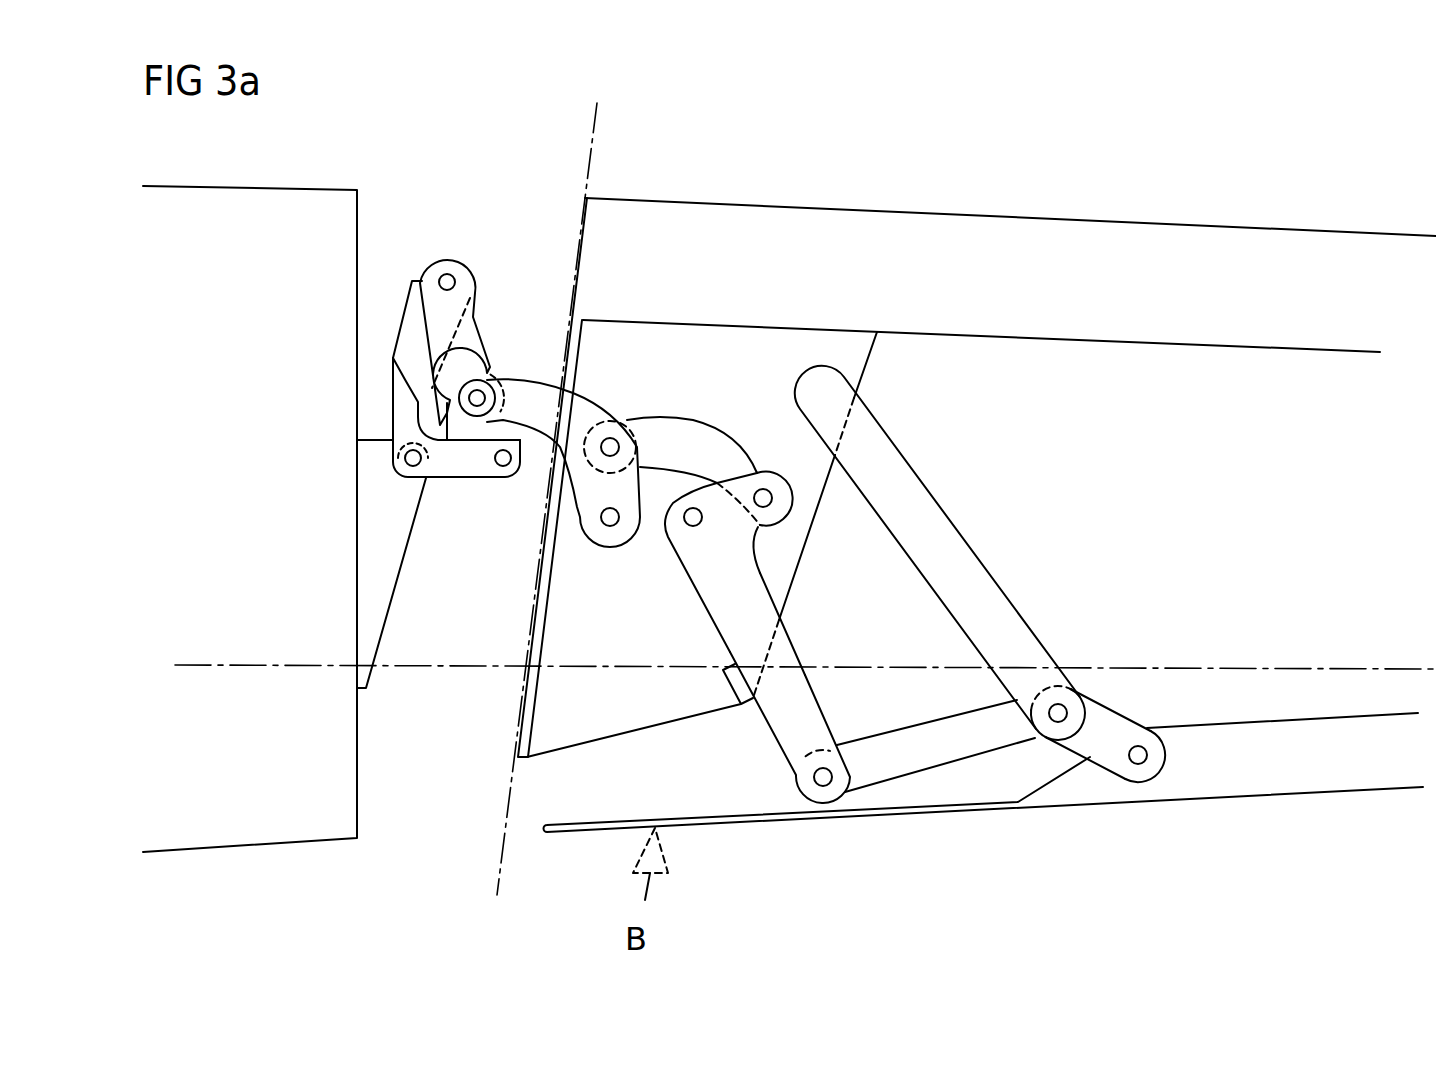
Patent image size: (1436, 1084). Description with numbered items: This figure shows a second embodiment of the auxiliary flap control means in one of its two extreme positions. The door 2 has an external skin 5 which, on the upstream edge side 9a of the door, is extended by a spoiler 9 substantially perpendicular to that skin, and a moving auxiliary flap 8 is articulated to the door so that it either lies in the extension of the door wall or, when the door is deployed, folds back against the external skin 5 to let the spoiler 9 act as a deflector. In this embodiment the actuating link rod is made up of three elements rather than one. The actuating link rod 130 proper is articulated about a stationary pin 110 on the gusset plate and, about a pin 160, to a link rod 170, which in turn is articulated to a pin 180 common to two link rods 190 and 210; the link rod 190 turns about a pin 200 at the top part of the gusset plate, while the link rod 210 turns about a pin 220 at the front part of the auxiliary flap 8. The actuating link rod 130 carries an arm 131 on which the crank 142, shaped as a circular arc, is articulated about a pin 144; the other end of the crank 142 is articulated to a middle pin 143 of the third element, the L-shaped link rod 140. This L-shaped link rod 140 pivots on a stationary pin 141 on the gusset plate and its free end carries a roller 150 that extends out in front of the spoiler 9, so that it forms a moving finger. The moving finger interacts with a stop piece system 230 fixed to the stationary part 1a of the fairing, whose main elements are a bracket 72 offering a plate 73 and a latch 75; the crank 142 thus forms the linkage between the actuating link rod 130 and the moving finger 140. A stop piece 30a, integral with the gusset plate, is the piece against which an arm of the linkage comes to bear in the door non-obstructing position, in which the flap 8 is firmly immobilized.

The stationary part of the fairing 1a is at (284, 519).
The door 2 is at (1322, 203).
The external skin 5 is at (1180, 218).
The auxiliary flap 8 is at (1223, 747).
The spoiler 9 is at (520, 718).
The upstream edge side 9a is at (590, 158).
The stop piece 30a is at (733, 693).
The bracket 72 is at (405, 367).
The plate 73 is at (455, 447).
The latch 75 is at (476, 292).
The stationary pin 110 is at (690, 527).
The actuating link rod 130 is at (783, 708).
The arm 131 is at (757, 533).
The L-shaped link rod 140 is at (605, 335).
The stationary pin 141 is at (602, 519).
The crank 142 is at (762, 324).
The middle pin 143 is at (697, 298).
The pin 144 is at (869, 315).
The roller 150 is at (490, 374).
The pin 160 is at (823, 787).
The link rod 170 is at (930, 770).
The pin 180 is at (1040, 733).
The link rod 190 is at (980, 562).
The pin 200 is at (957, 249).
The link rod 210 is at (1100, 763).
The pin 220 is at (1138, 766).
The stop piece system 230 is at (415, 262).